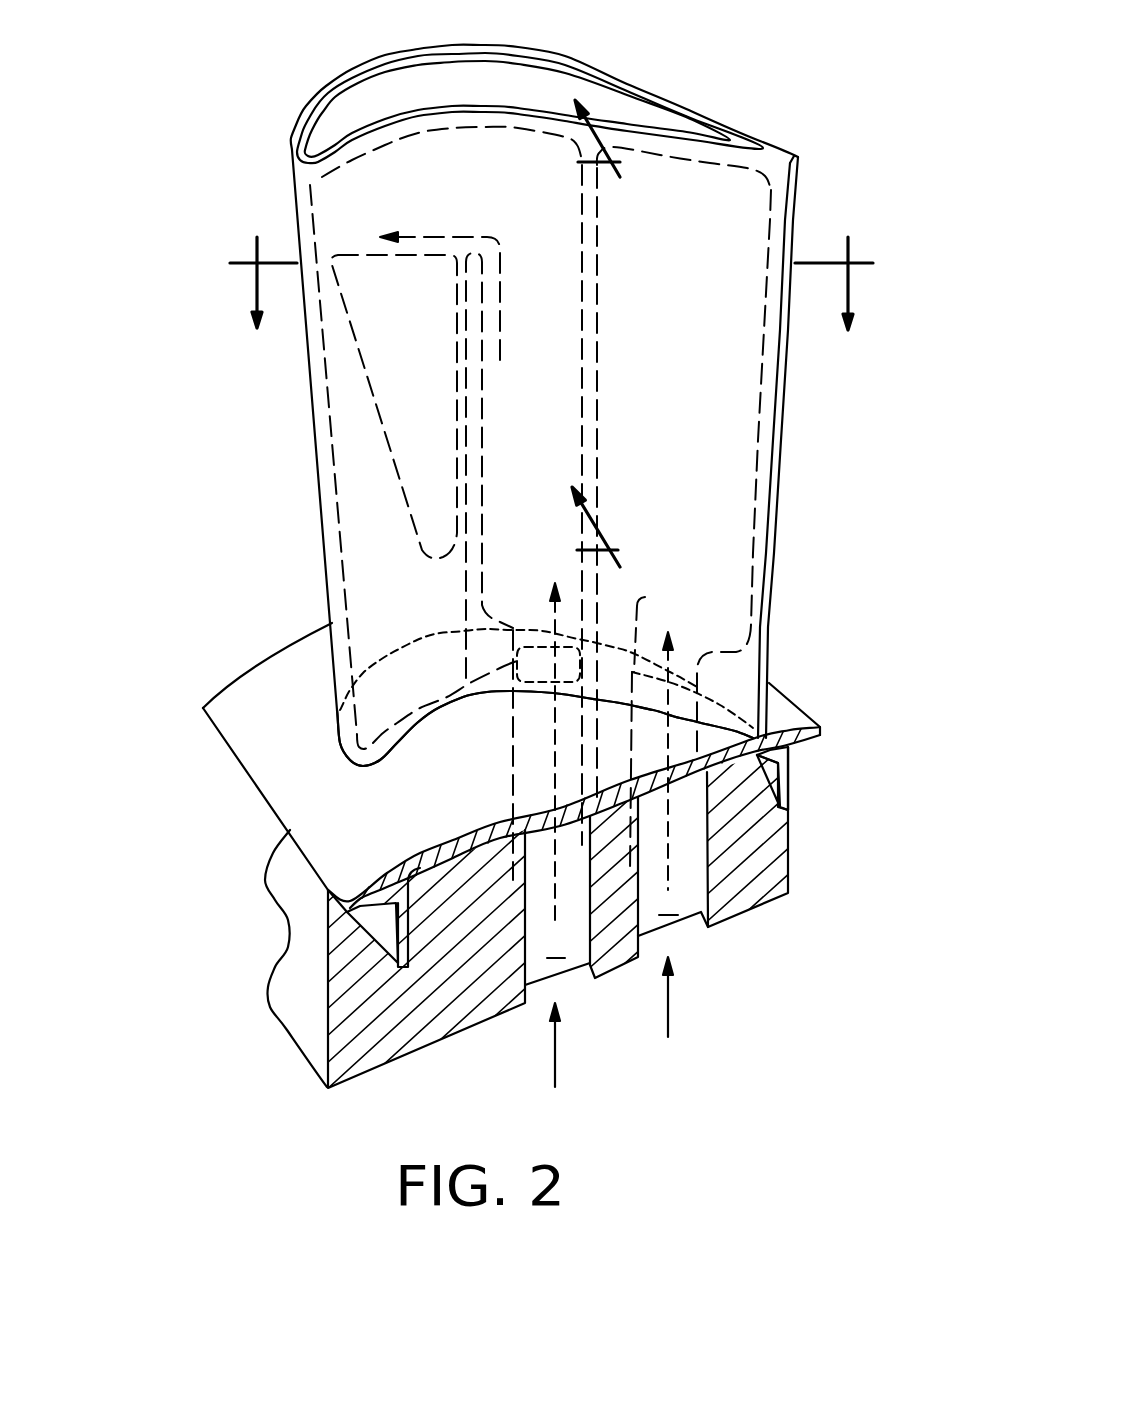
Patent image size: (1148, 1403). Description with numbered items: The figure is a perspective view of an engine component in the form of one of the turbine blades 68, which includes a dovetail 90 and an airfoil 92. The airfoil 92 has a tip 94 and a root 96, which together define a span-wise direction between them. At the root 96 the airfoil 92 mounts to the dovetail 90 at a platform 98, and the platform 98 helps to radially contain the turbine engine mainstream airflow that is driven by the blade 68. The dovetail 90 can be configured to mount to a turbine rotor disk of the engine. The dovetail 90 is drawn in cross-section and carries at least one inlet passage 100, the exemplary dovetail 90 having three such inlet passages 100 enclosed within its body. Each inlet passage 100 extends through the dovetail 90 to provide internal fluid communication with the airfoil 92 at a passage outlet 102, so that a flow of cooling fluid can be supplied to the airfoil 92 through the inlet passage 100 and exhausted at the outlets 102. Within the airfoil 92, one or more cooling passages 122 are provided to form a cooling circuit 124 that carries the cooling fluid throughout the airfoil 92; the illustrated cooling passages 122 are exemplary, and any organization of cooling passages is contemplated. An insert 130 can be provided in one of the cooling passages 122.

The turbine blade 68 is at (148, 110).
The dovetail 90 is at (307, 952).
The airfoil 92 is at (285, 354).
The tip 94 is at (396, 95).
The root 96 is at (720, 717).
The platform 98 is at (255, 675).
The inlet passage 100 is at (555, 1053).
The passage outlet 102 is at (566, 650).
The cooling passage 122 is at (331, 498).
The cooling circuit 124 is at (368, 567).
The insert 130 is at (355, 252).